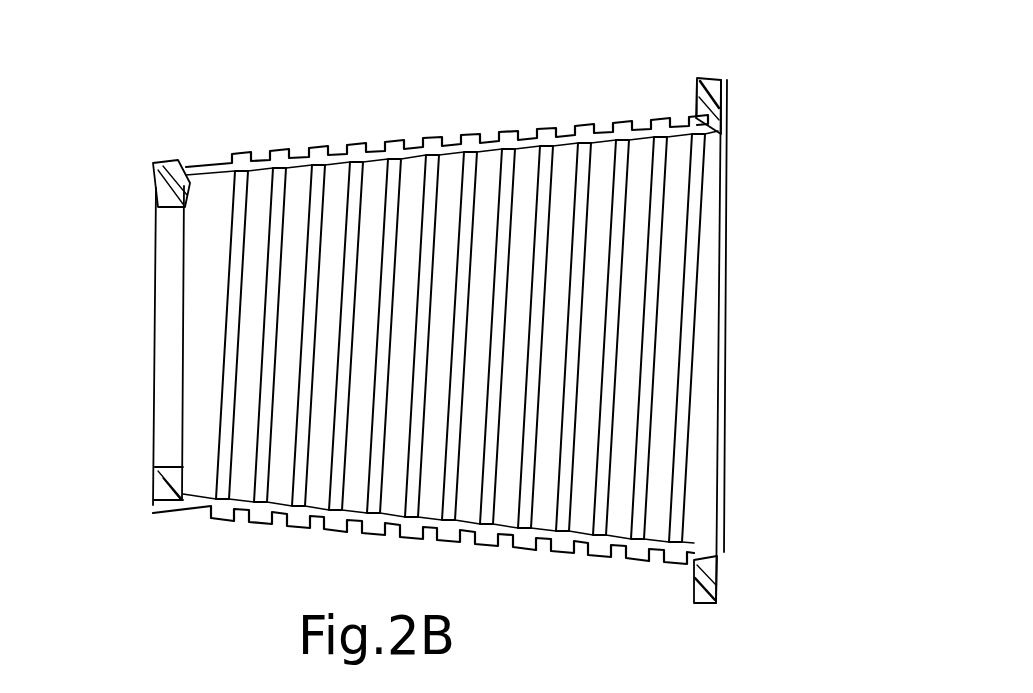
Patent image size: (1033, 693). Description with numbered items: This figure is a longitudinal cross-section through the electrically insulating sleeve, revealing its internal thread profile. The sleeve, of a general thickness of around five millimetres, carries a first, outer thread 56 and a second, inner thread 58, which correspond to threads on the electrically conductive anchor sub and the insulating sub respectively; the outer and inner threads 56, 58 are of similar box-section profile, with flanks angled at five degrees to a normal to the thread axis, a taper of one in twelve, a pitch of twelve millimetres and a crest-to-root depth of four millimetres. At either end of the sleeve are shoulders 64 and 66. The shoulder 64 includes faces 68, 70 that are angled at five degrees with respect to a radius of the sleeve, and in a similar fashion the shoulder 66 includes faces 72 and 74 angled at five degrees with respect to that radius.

The outer thread 56 is at (381, 112).
The inner thread 58 is at (717, 414).
The shoulder 64 is at (723, 82).
The shoulder 66 is at (160, 191).
The face 68 is at (727, 111).
The face 70 is at (696, 100).
The face 72 is at (165, 169).
The face 74 is at (190, 194).